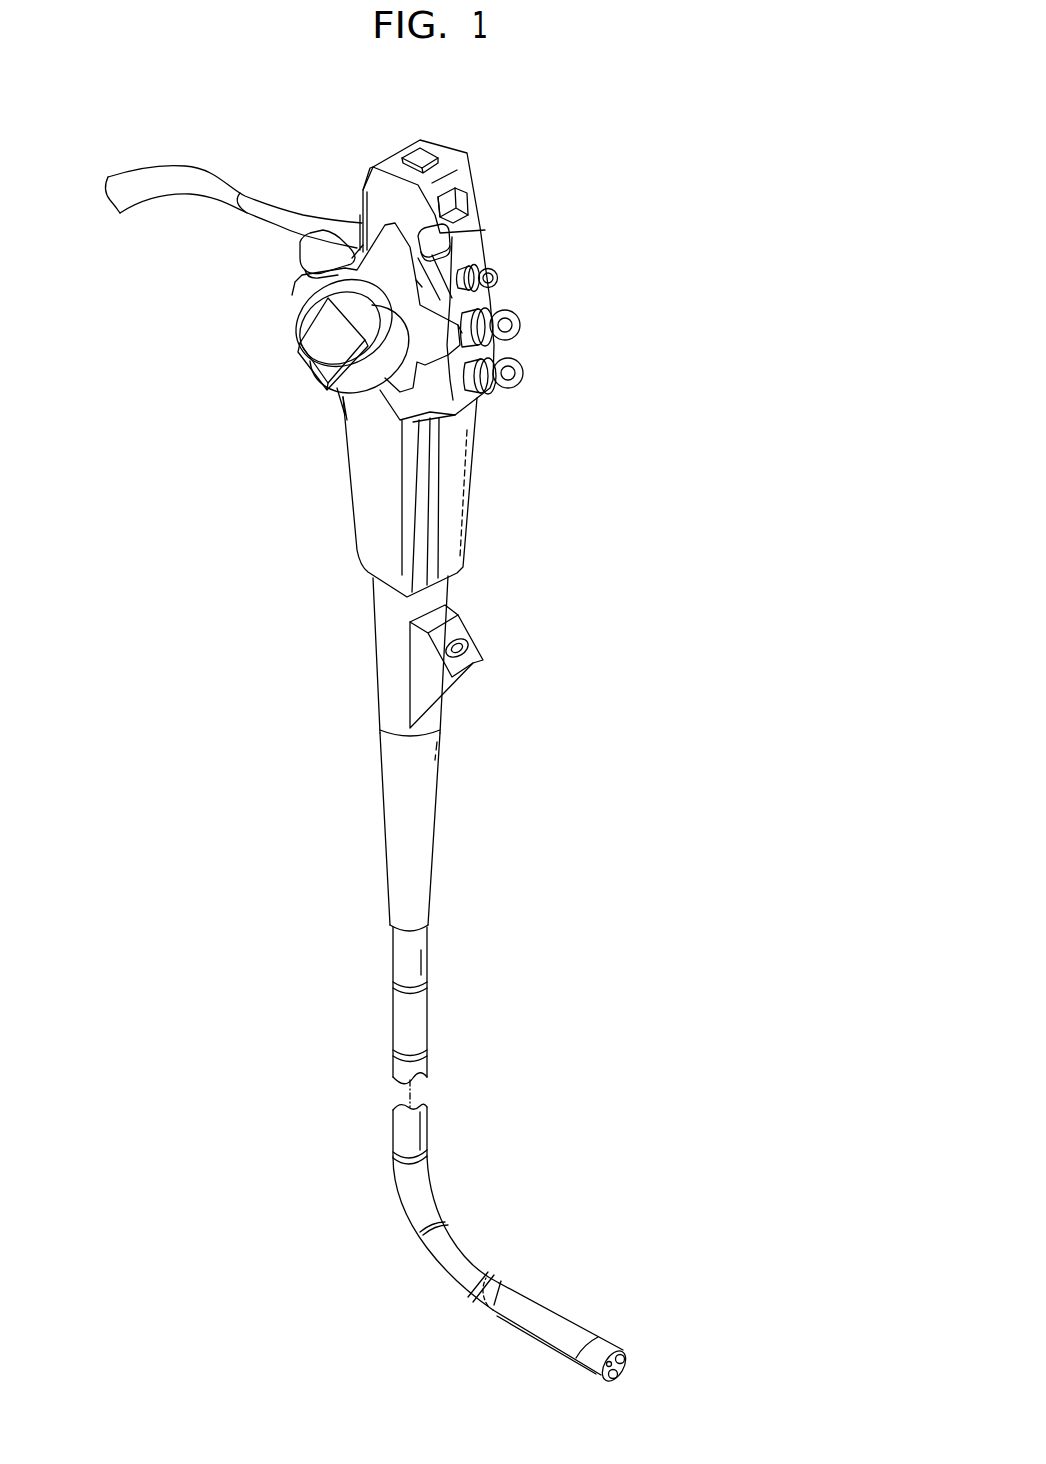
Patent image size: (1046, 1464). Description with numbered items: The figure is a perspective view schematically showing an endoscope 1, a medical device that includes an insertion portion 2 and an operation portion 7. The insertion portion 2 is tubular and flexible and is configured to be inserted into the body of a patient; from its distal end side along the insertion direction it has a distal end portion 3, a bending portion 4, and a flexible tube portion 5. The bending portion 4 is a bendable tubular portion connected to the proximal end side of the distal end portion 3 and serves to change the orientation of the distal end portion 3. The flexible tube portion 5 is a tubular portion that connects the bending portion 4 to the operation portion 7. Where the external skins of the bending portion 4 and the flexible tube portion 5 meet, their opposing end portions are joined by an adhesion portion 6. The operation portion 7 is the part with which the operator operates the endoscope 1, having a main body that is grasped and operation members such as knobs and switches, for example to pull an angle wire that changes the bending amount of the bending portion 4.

The endoscope 1 is at (590, 518).
The insertion portion 2 is at (648, 1222).
The distal end portion 3 is at (603, 1350).
The bending portion 4 is at (533, 1307).
The flexible tube portion 5 is at (466, 1260).
The adhesion portion 6 is at (488, 1306).
The operation portion 7 is at (530, 212).